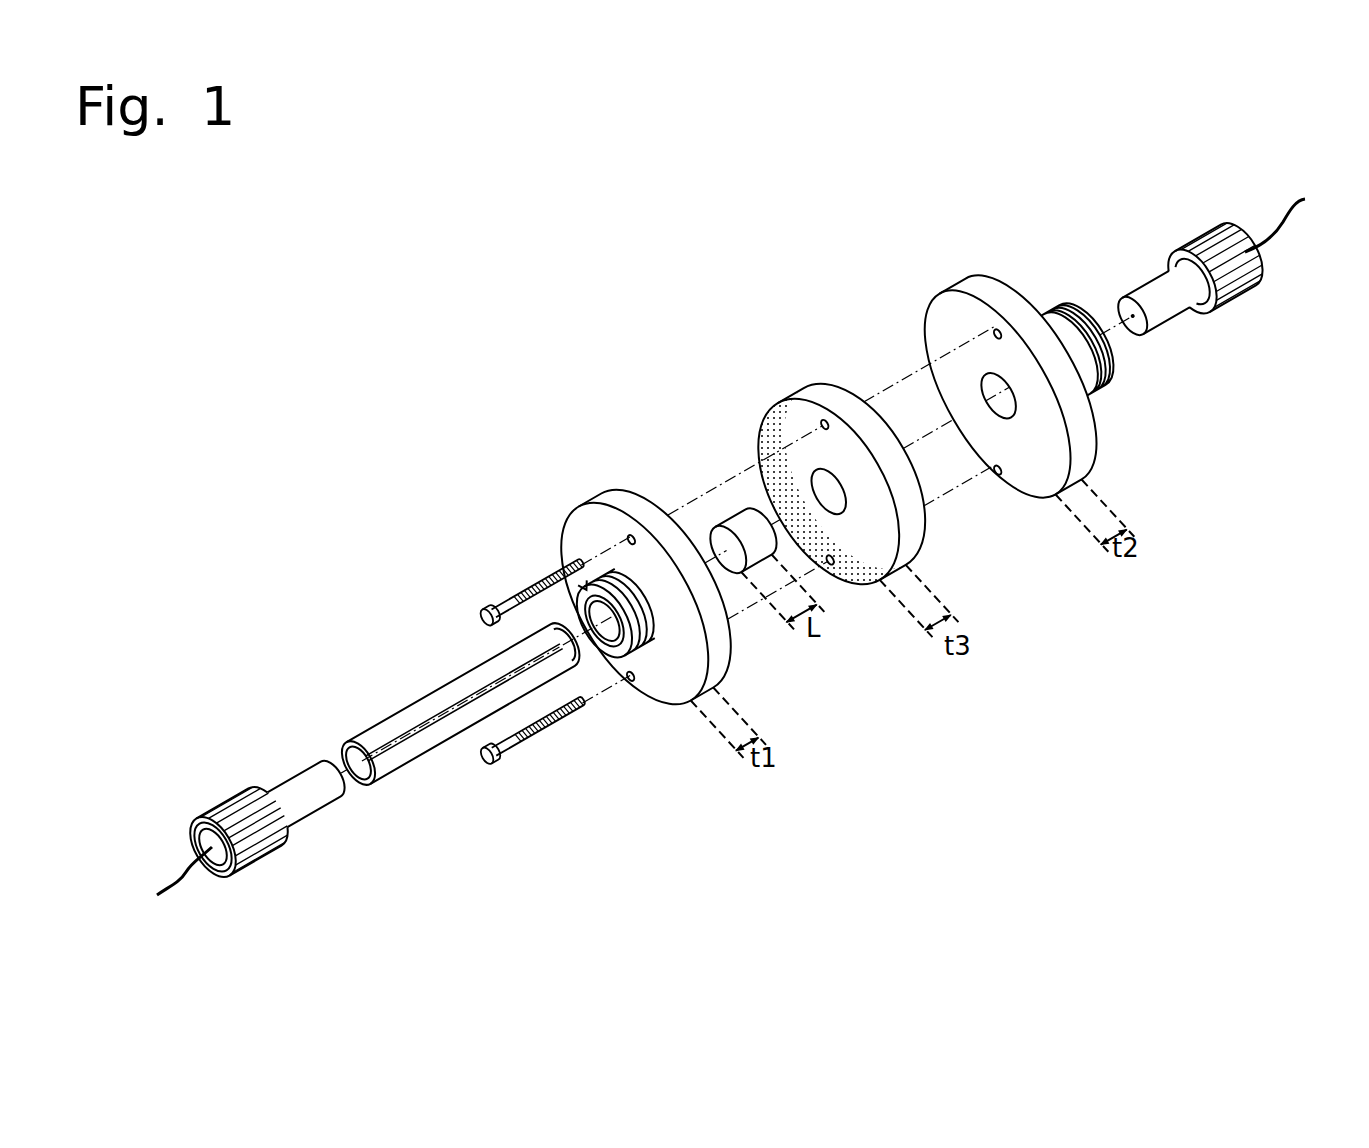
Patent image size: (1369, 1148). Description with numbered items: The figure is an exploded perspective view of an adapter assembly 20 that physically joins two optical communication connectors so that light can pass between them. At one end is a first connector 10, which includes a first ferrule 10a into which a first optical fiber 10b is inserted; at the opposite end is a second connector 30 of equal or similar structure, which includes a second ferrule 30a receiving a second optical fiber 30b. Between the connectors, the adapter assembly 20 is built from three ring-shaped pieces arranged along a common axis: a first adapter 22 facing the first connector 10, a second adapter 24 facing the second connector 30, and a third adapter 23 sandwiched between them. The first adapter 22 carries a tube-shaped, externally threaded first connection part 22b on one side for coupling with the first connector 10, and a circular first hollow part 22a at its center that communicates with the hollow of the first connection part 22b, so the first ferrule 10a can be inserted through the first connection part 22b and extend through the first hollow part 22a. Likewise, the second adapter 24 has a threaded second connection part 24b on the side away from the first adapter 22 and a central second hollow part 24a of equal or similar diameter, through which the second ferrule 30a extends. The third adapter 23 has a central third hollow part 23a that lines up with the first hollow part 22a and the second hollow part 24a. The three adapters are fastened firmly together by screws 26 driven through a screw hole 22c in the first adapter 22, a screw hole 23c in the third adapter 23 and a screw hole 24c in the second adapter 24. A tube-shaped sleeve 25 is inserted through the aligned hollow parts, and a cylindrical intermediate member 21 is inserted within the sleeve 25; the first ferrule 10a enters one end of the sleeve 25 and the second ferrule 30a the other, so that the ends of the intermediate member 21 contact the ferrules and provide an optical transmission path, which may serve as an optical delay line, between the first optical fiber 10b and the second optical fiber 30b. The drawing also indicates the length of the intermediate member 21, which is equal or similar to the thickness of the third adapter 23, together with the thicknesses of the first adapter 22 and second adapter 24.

The first connector 10 is at (225, 800).
The first ferrule 10a is at (282, 802).
The first optical fiber 10b is at (190, 862).
The adapter assembly 20 is at (749, 196).
The intermediate member 21 is at (740, 527).
The first adapter 22 is at (616, 499).
The first hollow part 22a is at (675, 598).
The first connection part 22b is at (590, 578).
The screw hole 22c is at (633, 532).
The third adapter 23 is at (812, 385).
The third hollow part 23a is at (820, 462).
The screw hole 23c is at (829, 420).
The second adapter 24 is at (982, 296).
The second hollow part 24a is at (985, 370).
The second connection part 24b is at (1067, 307).
The screw hole 24c is at (996, 323).
The sleeve 25 is at (437, 707).
The screw 26 is at (502, 607).
The second connector 30 is at (1215, 238).
The second ferrule 30a is at (1162, 287).
The second optical fiber 30b is at (1282, 222).